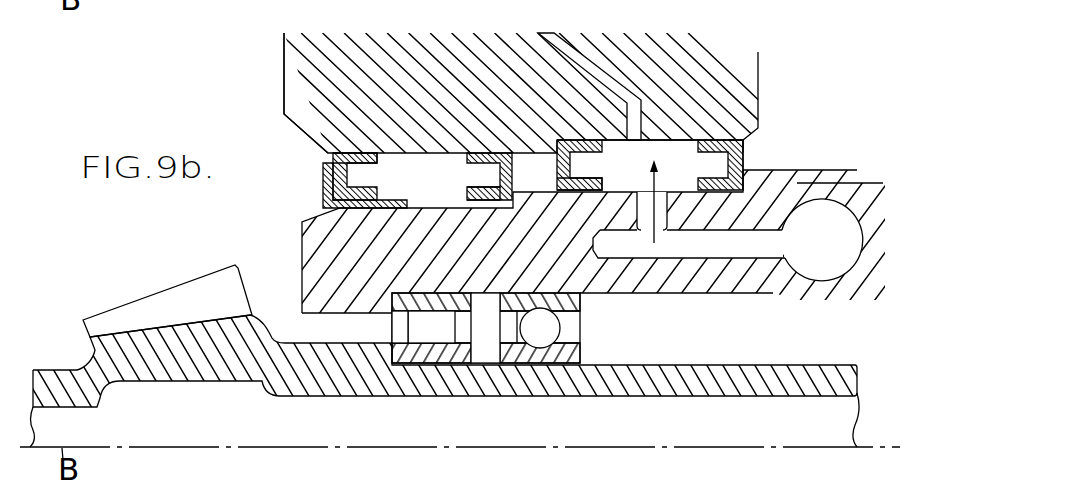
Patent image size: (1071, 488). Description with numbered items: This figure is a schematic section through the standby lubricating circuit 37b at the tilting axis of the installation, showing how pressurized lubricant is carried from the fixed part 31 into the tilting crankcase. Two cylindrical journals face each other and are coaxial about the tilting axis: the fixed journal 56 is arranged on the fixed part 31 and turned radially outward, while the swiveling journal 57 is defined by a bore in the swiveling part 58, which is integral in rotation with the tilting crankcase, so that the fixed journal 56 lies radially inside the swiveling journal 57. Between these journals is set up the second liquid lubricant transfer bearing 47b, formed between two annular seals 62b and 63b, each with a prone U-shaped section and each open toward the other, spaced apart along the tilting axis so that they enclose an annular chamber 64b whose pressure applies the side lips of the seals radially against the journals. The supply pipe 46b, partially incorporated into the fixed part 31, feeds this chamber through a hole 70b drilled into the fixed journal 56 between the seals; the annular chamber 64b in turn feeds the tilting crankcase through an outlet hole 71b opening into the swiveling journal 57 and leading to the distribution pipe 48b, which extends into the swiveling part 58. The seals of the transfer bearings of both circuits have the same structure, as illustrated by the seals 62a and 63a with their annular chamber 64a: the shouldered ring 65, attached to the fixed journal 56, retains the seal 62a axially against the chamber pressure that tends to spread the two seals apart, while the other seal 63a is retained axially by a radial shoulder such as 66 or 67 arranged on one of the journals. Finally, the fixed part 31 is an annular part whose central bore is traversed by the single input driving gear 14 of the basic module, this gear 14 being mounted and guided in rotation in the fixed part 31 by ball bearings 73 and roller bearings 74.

The single input driving gear 14 is at (298, 378).
The fixed part 31 is at (883, 183).
The backup lubricating circuit 37b is at (857, 271).
The pipe 46b is at (742, 250).
The second liquid lubricant transfer bearing 47b is at (752, 160).
The distribution pipe 48b is at (543, 53).
The fixed journal 56 is at (306, 232).
The swiveling journal 57 is at (286, 113).
The swiveling part 58 is at (333, 72).
The seal 62a is at (337, 155).
The seal 62b is at (552, 135).
The seal 63a is at (517, 197).
The seal 63b is at (748, 145).
The annular chamber 64a is at (425, 168).
The annular chamber 64b is at (688, 152).
The shouldered ring 65 is at (322, 193).
The radial shoulder 66 is at (557, 193).
The radial shoulder 67 is at (548, 134).
The hole 70b is at (670, 196).
The outlet hole 71b is at (660, 138).
The ball bearings 73 is at (568, 353).
The roller bearings 74 is at (453, 348).